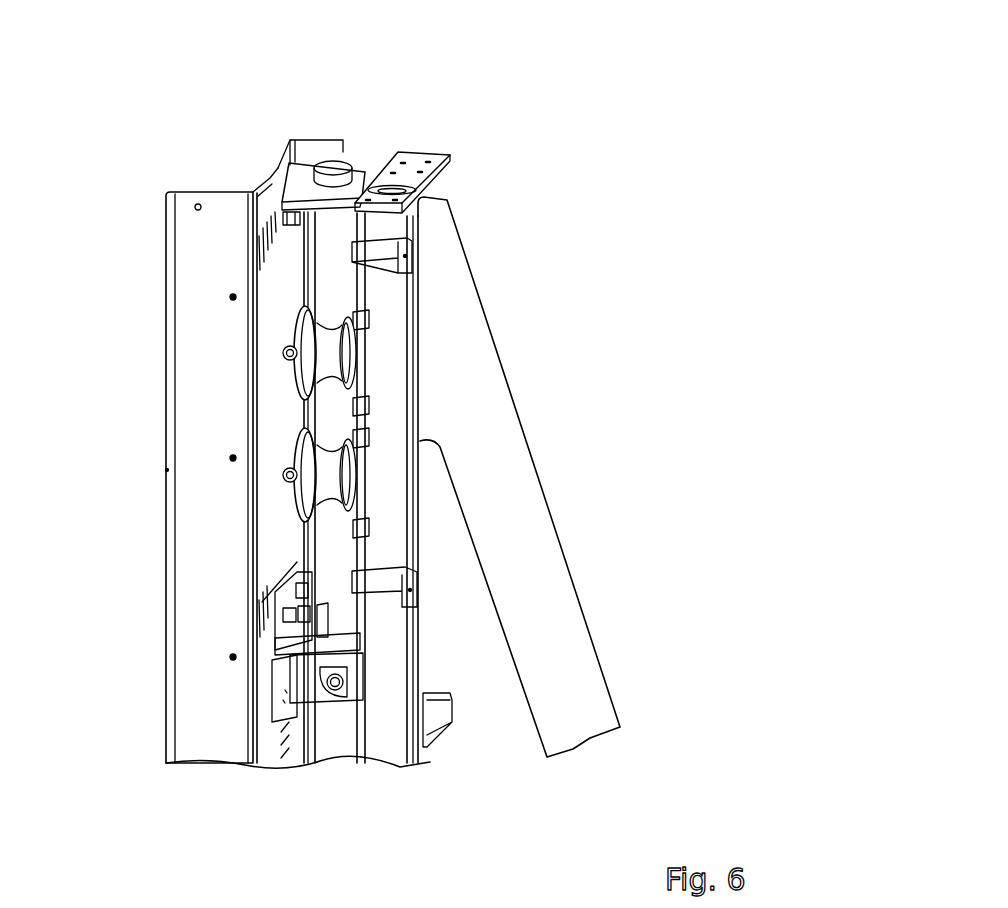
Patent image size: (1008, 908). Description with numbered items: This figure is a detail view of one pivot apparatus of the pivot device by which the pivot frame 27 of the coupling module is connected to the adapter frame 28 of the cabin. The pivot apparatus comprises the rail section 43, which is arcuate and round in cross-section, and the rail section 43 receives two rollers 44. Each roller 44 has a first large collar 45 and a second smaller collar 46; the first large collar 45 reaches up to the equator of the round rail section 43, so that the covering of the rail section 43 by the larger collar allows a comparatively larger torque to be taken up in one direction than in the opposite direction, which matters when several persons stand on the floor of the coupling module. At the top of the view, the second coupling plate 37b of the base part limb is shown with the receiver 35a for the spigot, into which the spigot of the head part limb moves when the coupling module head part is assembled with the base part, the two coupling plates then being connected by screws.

The pivot frame 27 is at (415, 135).
The adapter frame 28 is at (223, 207).
The second coupling plate 37b is at (420, 157).
The receiver for the spigot 35a is at (400, 191).
The rail section 43 is at (343, 288).
The roller 44 is at (330, 356).
The first large collar 45 is at (293, 453).
The second smaller collar 46 is at (343, 483).